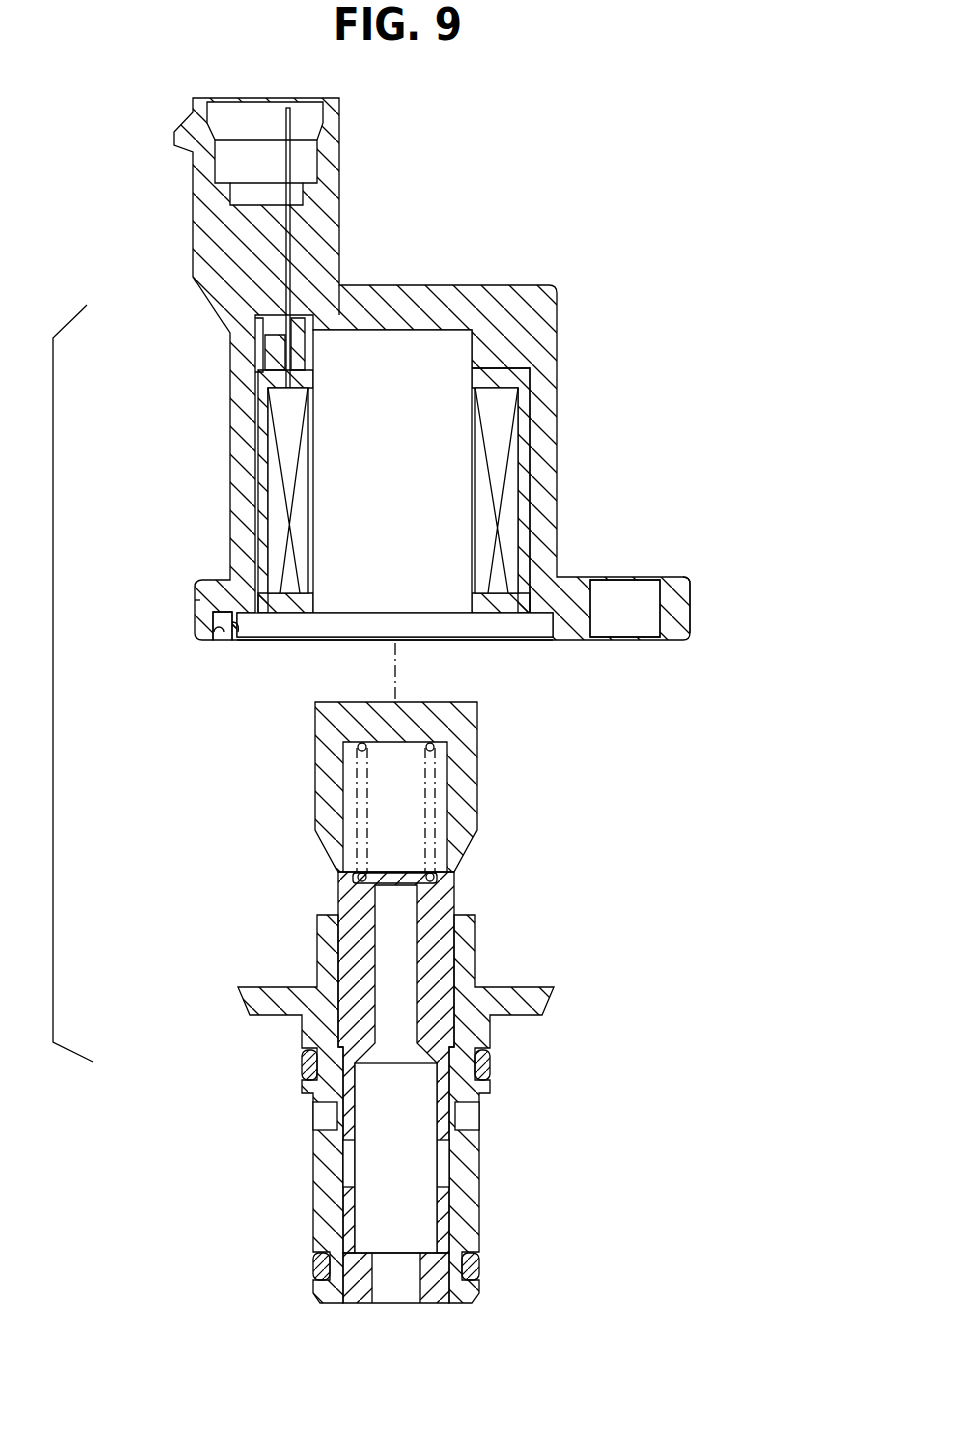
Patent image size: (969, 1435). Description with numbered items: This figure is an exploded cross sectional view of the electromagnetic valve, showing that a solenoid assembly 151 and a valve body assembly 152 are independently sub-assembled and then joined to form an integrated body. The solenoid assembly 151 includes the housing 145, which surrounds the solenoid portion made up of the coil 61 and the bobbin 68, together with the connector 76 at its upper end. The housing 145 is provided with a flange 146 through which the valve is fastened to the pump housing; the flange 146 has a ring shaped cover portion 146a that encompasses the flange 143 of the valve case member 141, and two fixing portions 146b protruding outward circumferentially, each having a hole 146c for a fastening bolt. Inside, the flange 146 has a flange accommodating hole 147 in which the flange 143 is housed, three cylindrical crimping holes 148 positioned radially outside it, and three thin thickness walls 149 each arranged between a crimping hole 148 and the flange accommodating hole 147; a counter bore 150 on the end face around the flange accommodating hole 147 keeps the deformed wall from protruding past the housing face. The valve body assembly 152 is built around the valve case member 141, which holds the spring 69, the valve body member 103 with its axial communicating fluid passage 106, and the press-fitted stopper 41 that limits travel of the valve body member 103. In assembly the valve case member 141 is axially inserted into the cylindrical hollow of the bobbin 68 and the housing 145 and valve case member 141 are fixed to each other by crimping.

The solenoid assembly 151 is at (687, 277).
The valve body assembly 152 is at (680, 762).
The connector 76 is at (332, 150).
The housing 145 is at (233, 469).
The flange 146 is at (213, 580).
The ring shaped cover portion 146a is at (197, 600).
The fixing portion 146b is at (690, 582).
The hole 146c is at (653, 620).
The bobbin 68 is at (493, 362).
The coil 61 is at (505, 418).
The counter bore 150 is at (490, 640).
The flange accommodating hole 147 is at (545, 636).
The crimping hole 148 is at (222, 642).
The thin thickness wall 149 is at (236, 630).
The valve case member 141 is at (472, 795).
The spring 69 is at (357, 790).
The flange 143 is at (516, 987).
The valve body member 103 is at (440, 1022).
The communicating fluid passage 106 is at (422, 1213).
The stopper 41 is at (445, 1290).